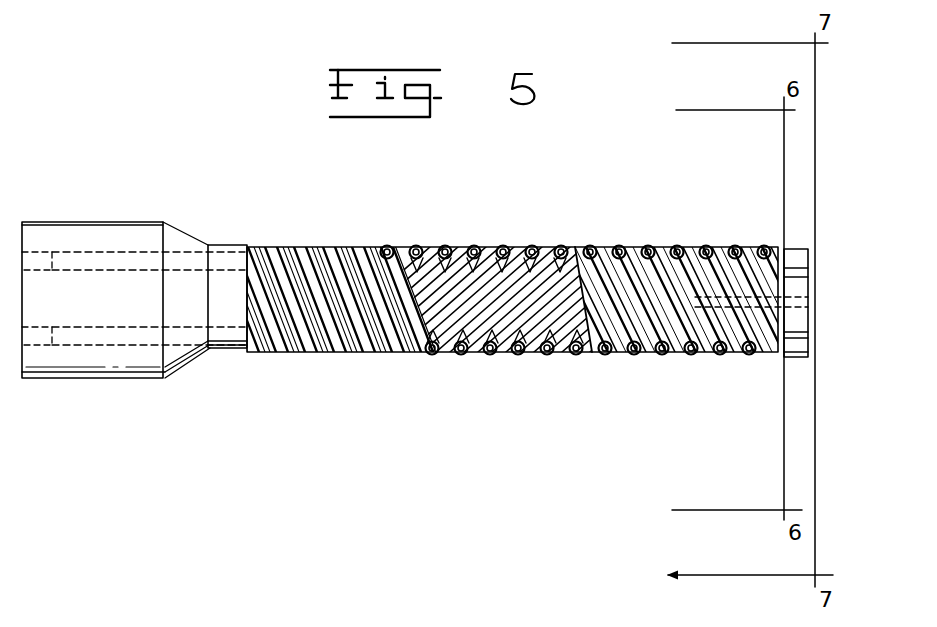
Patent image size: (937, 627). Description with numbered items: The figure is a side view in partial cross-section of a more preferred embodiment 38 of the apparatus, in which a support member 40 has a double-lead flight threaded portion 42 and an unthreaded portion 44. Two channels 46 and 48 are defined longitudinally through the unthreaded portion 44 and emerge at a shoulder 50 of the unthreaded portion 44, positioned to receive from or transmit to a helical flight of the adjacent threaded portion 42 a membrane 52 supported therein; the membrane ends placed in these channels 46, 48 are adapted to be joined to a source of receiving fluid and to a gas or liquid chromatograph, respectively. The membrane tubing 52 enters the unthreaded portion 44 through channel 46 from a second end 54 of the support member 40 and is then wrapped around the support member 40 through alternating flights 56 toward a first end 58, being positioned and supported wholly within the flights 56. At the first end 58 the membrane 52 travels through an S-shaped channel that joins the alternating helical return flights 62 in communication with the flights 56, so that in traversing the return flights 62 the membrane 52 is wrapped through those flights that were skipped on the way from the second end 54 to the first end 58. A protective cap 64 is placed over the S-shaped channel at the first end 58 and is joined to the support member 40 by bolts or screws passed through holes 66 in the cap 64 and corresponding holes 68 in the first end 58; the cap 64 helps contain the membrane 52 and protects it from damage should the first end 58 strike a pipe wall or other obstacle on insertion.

The preferred embodiment of the apparatus 38 is at (128, 178).
The support member 40 is at (255, 238).
The double-lead flight threaded portion 42 is at (520, 243).
The unthreaded portion 44 is at (167, 220).
The channel 46 is at (180, 251).
The channel 48 is at (128, 341).
The shoulder 50 is at (262, 352).
The membrane 52 is at (275, 246).
The second end 54 is at (24, 256).
The alternating flights 56 is at (340, 246).
The first end 58 is at (800, 250).
The alternating helical return flights 62 is at (367, 246).
The protective cap 64 is at (806, 256).
The holes 66 is at (801, 304).
The holes 68 is at (713, 298).